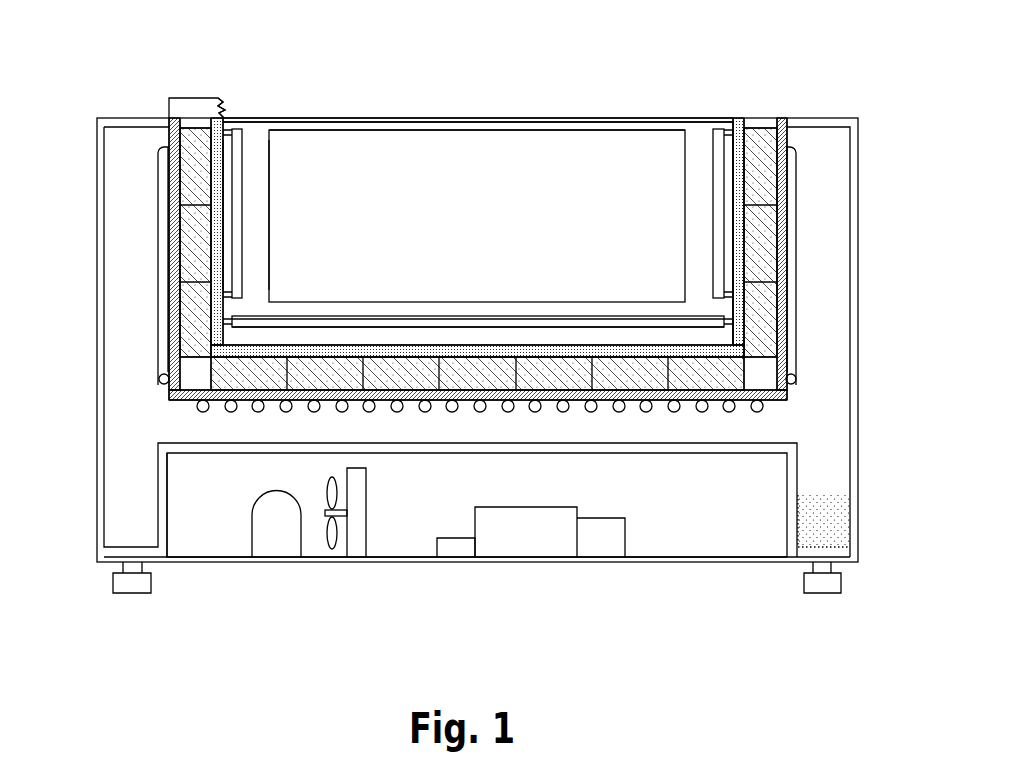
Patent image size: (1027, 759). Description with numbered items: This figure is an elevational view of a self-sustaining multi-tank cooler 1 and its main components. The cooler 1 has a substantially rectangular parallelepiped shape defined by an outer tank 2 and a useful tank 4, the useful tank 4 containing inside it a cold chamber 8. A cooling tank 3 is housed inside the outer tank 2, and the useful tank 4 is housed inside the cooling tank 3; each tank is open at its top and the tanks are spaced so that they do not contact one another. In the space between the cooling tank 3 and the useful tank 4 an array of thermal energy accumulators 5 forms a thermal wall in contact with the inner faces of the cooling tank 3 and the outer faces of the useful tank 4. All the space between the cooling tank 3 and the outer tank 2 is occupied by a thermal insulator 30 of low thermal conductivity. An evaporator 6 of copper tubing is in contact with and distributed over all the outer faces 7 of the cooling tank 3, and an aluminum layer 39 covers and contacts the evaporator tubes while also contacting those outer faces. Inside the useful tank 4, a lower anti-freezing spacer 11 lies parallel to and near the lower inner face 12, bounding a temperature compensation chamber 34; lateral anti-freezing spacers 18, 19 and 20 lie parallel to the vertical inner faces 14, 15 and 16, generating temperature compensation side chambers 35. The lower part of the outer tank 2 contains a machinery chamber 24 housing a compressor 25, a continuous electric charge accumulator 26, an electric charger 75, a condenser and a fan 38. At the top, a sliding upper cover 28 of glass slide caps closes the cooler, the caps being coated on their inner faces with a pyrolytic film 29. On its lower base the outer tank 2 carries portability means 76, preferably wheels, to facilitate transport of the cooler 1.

The self-sustaining multi-tank cooler 1 is at (80, 113).
The outer tank 2 is at (102, 265).
The cooling tank 3 is at (170, 393).
The useful tank 4 is at (731, 121).
The thermal energy accumulators 5 is at (757, 240).
The evaporator 6 is at (792, 318).
The outer faces of the cooling tank 7 is at (170, 318).
The cold chamber 8 is at (506, 175).
The lower anti-freezing spacer 11 is at (297, 322).
The lower inner face of the useful tank 12 is at (337, 345).
The vertical inner face of the useful tank 14 is at (223, 160).
The vertical inner face of the useful tank 15 is at (238, 207).
The vertical inner face of the useful tank 16 is at (732, 170).
The lateral anti-freezing spacer 18 is at (253, 147).
The lateral anti-freezing spacer 19 is at (320, 157).
The lateral anti-freezing spacer 20 is at (720, 218).
The machinery chamber 24 is at (221, 503).
The compressor 25 is at (267, 545).
The continuous electric charge accumulator 26 is at (553, 527).
The sliding upper cover 28 is at (190, 108).
The pyrolytic film 29 is at (200, 118).
The thermal insulator 30 is at (827, 533).
The temperature compensation chamber 34 is at (262, 338).
The temperature compensation side chambers 35 is at (227, 242).
The fan 38 is at (357, 532).
The aluminum layer 39 is at (440, 400).
The electric charger 75 is at (458, 550).
The portability means 76 is at (813, 585).